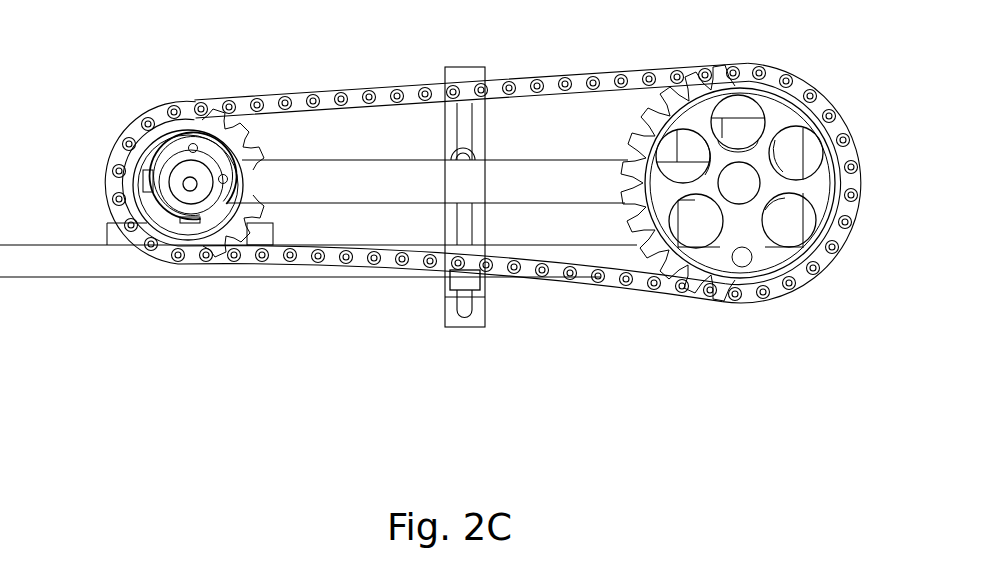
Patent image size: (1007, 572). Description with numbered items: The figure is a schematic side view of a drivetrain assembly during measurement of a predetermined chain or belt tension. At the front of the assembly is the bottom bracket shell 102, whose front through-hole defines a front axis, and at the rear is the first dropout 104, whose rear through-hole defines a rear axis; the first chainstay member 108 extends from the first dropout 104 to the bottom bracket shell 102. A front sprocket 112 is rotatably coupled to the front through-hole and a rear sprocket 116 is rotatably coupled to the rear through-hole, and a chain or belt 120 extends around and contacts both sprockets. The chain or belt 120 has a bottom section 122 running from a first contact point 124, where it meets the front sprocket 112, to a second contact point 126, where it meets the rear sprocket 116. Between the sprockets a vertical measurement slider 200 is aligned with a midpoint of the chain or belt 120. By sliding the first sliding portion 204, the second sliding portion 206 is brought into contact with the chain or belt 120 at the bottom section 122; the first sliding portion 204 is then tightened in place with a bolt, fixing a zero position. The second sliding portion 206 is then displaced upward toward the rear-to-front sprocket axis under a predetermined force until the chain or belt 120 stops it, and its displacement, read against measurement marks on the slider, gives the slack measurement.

The bottom bracket shell 102 is at (692, 142).
The first dropout 104 is at (172, 145).
The first chainstay member 108 is at (390, 202).
The front sprocket 112 is at (789, 253).
The rear sprocket 116 is at (165, 218).
The chain or belt 120 is at (660, 292).
The bottom section 122 is at (611, 326).
The first contact point 124 is at (737, 282).
The second contact point 126 is at (192, 247).
The vertical measurement slider 200 is at (428, 60).
The first sliding portion 204 is at (475, 322).
The second sliding portion 206 is at (447, 285).